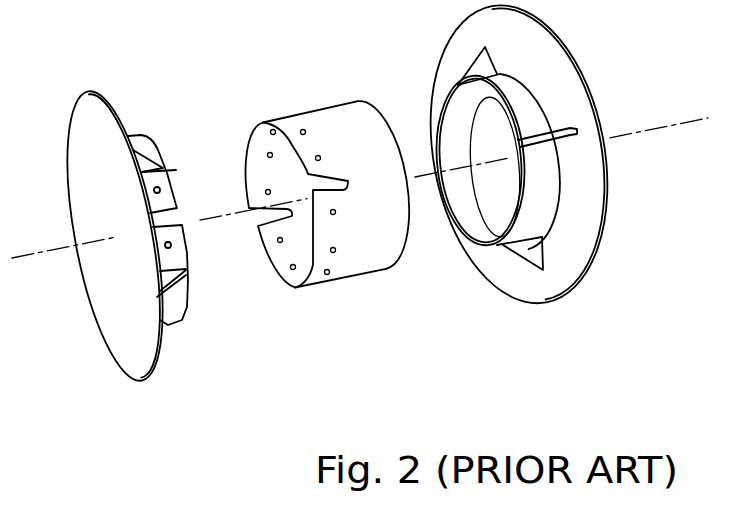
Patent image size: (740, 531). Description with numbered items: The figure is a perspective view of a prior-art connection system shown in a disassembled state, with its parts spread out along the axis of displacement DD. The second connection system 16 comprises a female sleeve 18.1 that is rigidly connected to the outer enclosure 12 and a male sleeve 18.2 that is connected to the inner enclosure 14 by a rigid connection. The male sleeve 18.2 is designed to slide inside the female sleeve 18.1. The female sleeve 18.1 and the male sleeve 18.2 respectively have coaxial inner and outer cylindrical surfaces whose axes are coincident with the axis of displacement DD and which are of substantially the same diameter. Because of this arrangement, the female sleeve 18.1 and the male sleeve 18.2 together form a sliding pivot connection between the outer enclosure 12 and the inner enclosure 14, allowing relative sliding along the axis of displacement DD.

The outer enclosure 12 is at (591, 61).
The inner enclosure 14 is at (67, 97).
The second connection system 16 is at (206, 62).
The female sleeve 18.1 is at (543, 187).
The male sleeve 18.2 is at (336, 106).
The axis of displacement DD is at (217, 222).